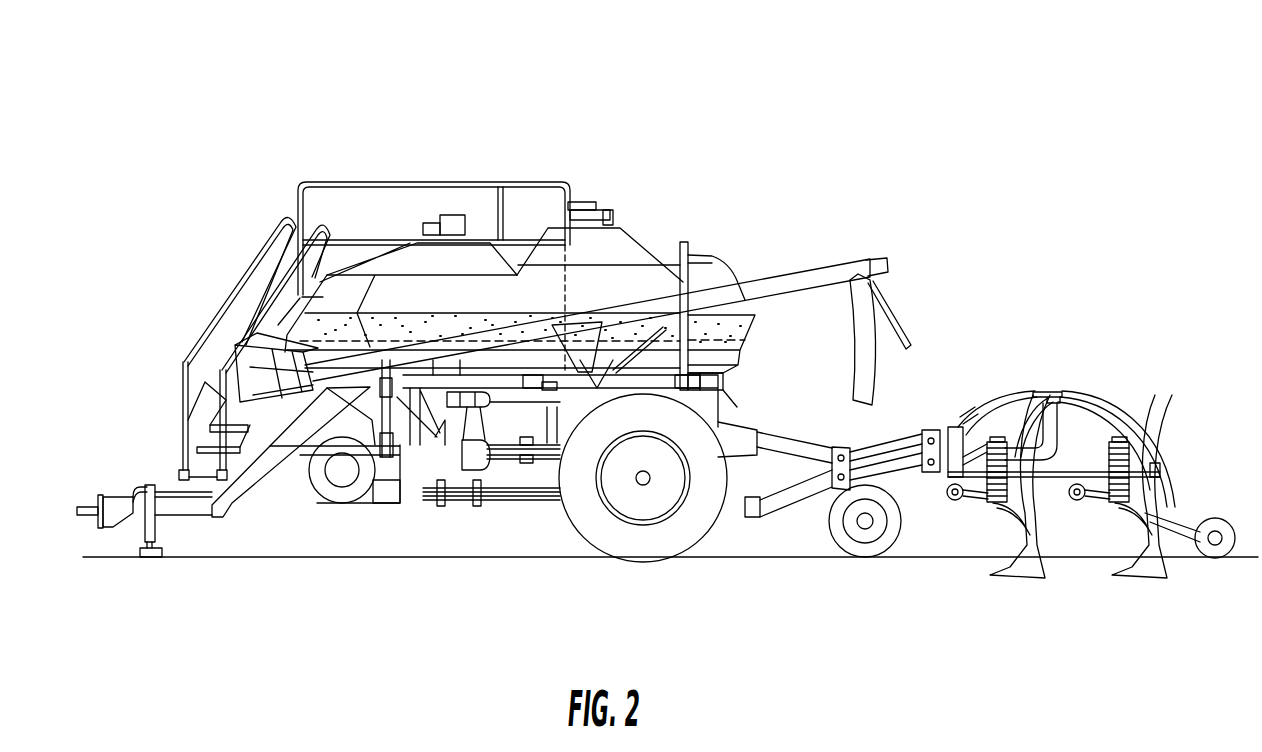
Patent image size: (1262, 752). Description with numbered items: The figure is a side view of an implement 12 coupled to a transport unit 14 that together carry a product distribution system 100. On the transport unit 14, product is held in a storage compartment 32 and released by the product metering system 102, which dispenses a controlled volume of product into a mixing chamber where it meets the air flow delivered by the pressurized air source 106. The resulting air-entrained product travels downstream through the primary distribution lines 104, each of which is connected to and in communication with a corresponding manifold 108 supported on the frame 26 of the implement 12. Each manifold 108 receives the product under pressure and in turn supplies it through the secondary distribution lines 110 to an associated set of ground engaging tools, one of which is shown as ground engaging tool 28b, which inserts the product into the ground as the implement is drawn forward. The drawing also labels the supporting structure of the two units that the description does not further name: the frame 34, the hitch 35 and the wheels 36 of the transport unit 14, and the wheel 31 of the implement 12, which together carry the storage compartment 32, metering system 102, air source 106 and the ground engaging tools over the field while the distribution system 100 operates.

The implement 12 is at (1066, 307).
The air cart 14 is at (441, 84).
The frame 26 is at (1047, 477).
The ground engaging tool 28b is at (1019, 587).
The wheel 31 is at (879, 556).
The storage compartment 32 is at (417, 262).
The frame 34 is at (733, 400).
The hitch 35 is at (97, 505).
The wheels 36 is at (412, 520).
The product distribution system 100 is at (286, 513).
The product metering system 102 is at (463, 492).
The primary distribution lines 104 is at (500, 500).
The pressurized air source 106 is at (326, 490).
The manifold 108 is at (1058, 393).
The secondary distribution lines 110 is at (977, 413).